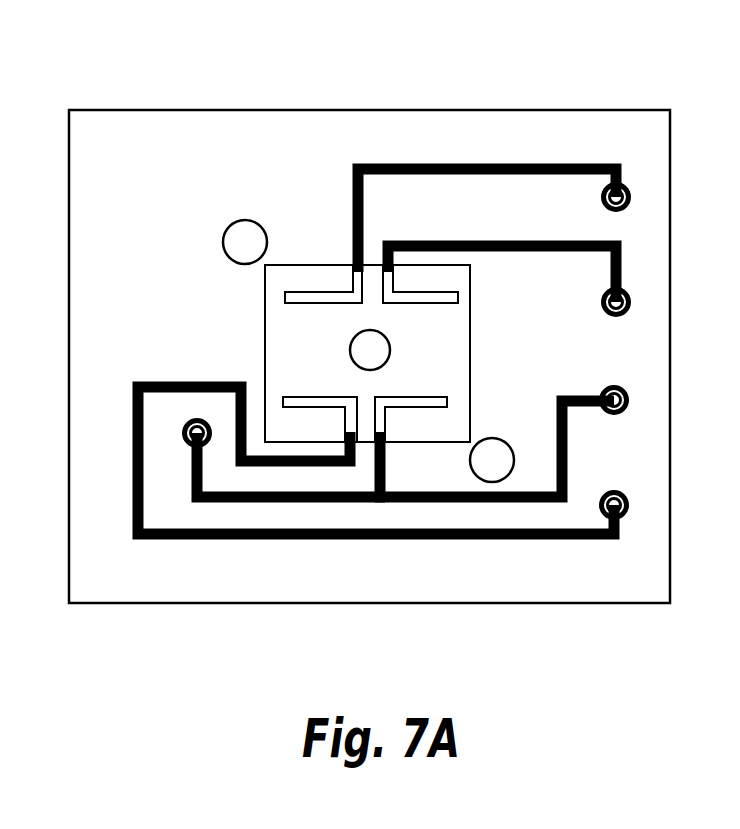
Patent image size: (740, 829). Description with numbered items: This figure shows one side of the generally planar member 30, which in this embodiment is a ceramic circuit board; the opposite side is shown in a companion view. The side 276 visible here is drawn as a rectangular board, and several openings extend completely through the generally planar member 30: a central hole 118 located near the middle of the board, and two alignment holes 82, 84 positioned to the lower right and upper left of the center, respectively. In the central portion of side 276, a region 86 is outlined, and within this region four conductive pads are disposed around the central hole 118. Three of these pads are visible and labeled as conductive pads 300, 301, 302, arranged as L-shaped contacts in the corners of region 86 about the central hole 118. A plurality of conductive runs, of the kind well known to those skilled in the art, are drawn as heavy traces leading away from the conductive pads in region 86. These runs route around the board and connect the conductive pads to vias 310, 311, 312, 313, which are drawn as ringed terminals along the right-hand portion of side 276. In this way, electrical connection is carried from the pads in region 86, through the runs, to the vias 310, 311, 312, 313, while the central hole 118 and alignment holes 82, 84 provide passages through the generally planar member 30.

The generally planar member 30 is at (447, 396).
The side 276 is at (150, 182).
The alignment hole 84 is at (257, 220).
The alignment hole 82 is at (495, 440).
The region 86 is at (265, 297).
The central hole 118 is at (350, 348).
The conductive pad 300 is at (456, 305).
The conductive pad 301 is at (288, 305).
The conductive pad 302 is at (292, 396).
The via 310 is at (632, 190).
The via 311 is at (632, 295).
The via 312 is at (628, 395).
The via 313 is at (630, 503).